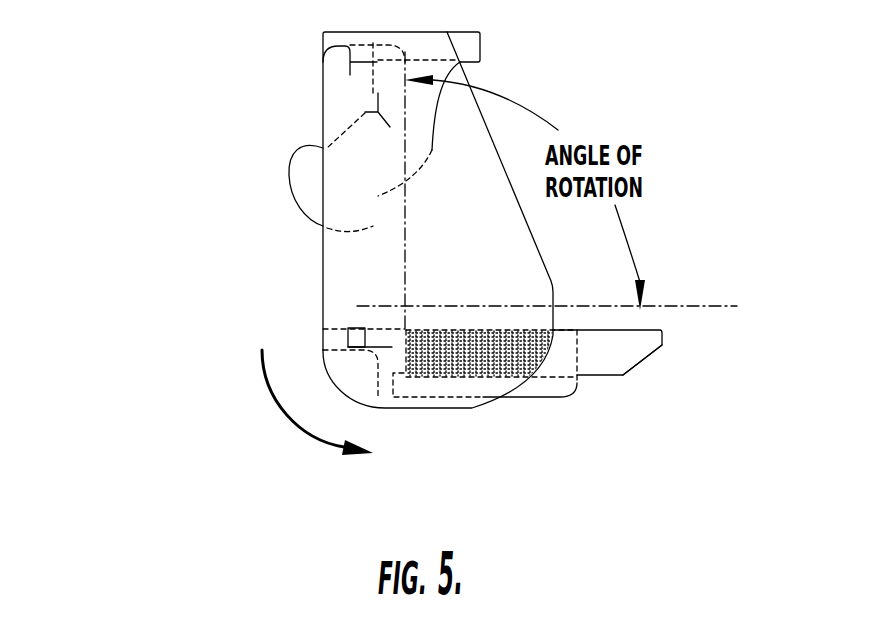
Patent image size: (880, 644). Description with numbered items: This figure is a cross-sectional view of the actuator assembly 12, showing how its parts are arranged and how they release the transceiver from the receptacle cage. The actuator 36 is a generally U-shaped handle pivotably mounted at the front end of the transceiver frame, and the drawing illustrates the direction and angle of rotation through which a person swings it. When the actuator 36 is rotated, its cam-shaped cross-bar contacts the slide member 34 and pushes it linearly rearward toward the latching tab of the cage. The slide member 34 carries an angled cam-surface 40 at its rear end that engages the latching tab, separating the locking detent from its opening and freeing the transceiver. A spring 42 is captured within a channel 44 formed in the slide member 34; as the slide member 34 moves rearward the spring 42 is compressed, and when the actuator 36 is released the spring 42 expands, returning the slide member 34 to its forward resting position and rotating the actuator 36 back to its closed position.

The actuator assembly 12 is at (195, 329).
The slide member 34 is at (613, 353).
The actuator 36 is at (390, 127).
The angled cam-surface 40 is at (652, 352).
The spring 42 is at (488, 352).
The channel 44 is at (547, 365).